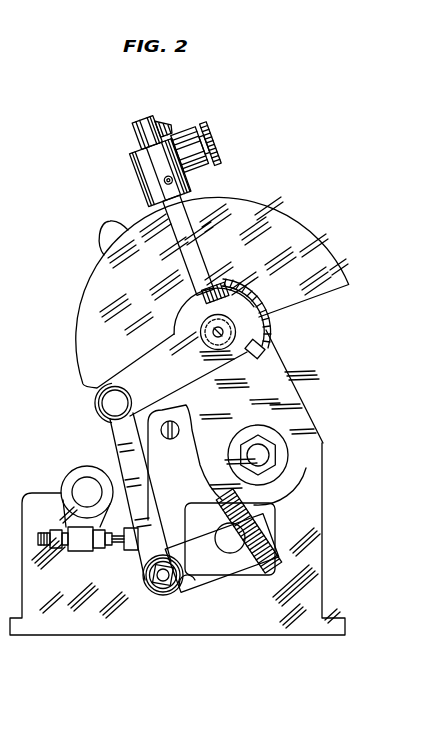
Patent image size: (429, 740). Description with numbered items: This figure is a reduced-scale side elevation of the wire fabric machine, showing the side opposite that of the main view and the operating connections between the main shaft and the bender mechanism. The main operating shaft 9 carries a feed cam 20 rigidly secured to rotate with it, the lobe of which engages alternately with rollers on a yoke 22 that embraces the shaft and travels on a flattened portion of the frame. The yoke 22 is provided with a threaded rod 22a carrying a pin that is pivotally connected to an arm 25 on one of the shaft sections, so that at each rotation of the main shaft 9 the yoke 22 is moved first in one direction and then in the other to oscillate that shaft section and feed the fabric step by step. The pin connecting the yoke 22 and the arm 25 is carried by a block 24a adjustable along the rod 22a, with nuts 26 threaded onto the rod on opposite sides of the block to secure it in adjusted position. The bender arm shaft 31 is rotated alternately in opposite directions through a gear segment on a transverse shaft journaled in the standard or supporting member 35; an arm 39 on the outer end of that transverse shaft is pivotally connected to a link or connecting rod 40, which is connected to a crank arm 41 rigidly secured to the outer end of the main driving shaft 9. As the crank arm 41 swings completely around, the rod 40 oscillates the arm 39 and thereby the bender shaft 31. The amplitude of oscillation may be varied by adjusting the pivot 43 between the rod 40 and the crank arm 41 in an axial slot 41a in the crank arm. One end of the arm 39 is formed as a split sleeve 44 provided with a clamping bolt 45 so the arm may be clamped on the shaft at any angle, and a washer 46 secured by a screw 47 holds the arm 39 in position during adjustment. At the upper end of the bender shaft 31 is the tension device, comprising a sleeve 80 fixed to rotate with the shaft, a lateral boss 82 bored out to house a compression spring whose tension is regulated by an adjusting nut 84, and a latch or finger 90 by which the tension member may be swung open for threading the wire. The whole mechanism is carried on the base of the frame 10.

The main operating shaft 9 is at (230, 538).
The base frame 10 is at (318, 553).
The feed cam 20 is at (232, 578).
The yoke 22 is at (178, 503).
The threaded rod 22a is at (121, 549).
The block 24a is at (74, 551).
The arm 25 is at (72, 520).
The nuts 26 is at (49, 546).
The bender arm shaft 31 is at (136, 132).
The standard or supporting member 35 is at (292, 390).
The arm 39 is at (150, 351).
The link or connecting rod 40 is at (118, 439).
The crank arm 41 is at (228, 568).
The axial slot 41a is at (186, 586).
The pivot 43 is at (156, 582).
The split sleeve 44 is at (232, 298).
The clamping bolt 45 is at (213, 288).
The washer 46 is at (263, 335).
The screw 47 is at (201, 330).
The sleeve 80 is at (143, 189).
The lateral boss or enlargement 82 is at (188, 131).
The adjusting nut 84 is at (214, 140).
The latch or finger 90 is at (163, 126).